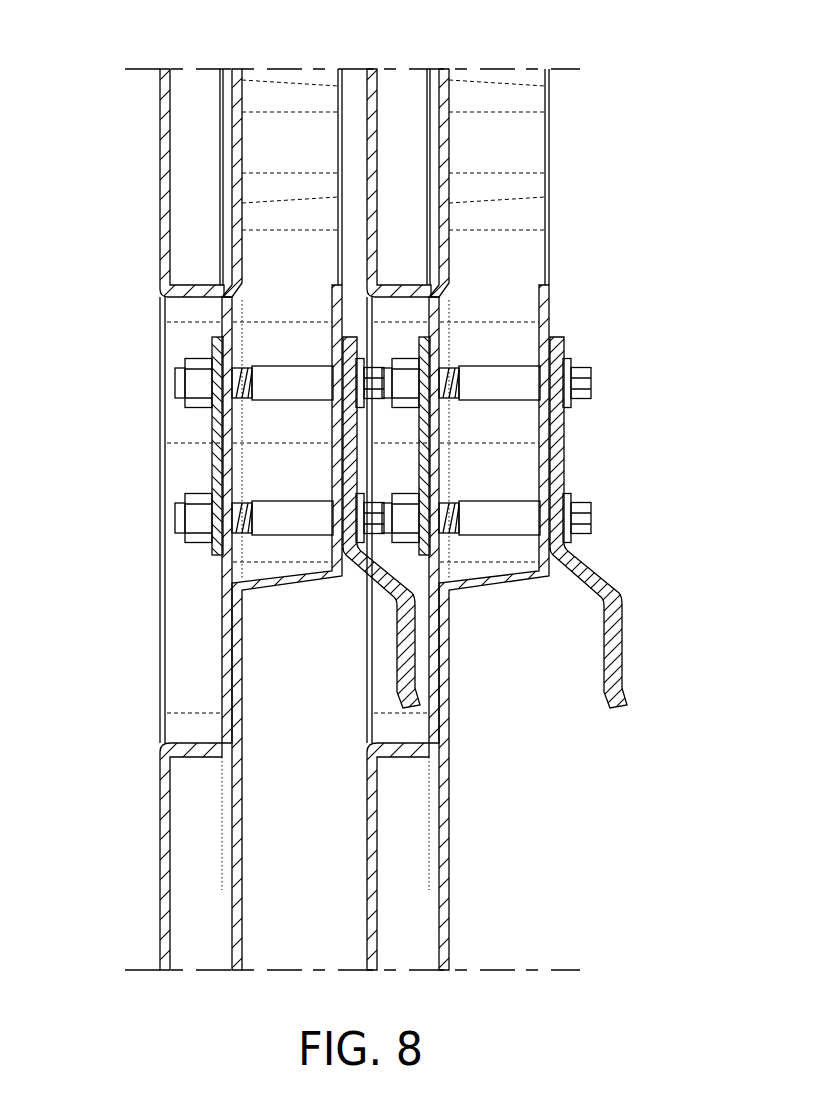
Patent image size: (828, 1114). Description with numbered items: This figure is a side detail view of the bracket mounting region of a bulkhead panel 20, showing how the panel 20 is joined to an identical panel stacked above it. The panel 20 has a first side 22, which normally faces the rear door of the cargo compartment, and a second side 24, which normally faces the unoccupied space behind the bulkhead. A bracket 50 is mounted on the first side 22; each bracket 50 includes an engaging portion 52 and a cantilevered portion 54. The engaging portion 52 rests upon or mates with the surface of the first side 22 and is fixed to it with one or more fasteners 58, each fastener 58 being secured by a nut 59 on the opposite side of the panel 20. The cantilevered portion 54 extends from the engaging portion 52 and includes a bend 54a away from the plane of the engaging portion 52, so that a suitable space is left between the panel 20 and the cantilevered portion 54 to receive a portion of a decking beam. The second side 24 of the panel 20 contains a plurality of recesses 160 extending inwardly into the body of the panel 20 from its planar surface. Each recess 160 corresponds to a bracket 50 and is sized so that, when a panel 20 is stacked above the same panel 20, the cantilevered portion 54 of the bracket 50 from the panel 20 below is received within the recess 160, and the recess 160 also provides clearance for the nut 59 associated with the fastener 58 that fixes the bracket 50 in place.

The panel 20 is at (291, 122).
The first side 22 is at (548, 258).
The second side 24 is at (163, 206).
The bracket 50 is at (343, 427).
The engaging portion 52 is at (378, 502).
The cantilevered portion 54 is at (409, 650).
The bend 54a is at (385, 585).
The fastener 58 is at (368, 505).
The nut 59 is at (200, 546).
The recess 160 is at (185, 648).